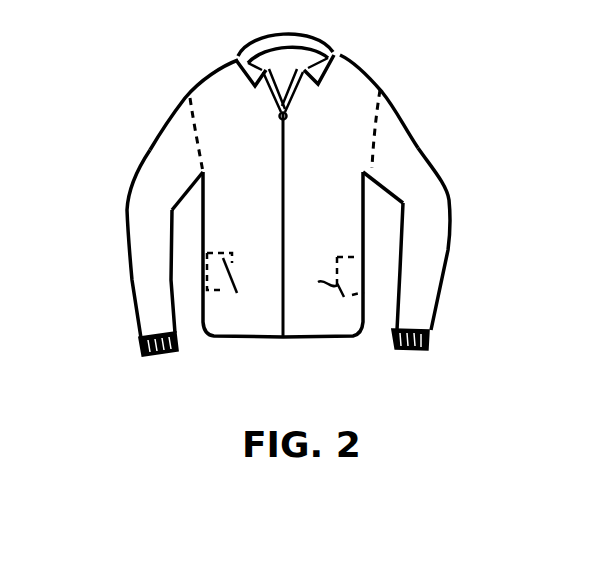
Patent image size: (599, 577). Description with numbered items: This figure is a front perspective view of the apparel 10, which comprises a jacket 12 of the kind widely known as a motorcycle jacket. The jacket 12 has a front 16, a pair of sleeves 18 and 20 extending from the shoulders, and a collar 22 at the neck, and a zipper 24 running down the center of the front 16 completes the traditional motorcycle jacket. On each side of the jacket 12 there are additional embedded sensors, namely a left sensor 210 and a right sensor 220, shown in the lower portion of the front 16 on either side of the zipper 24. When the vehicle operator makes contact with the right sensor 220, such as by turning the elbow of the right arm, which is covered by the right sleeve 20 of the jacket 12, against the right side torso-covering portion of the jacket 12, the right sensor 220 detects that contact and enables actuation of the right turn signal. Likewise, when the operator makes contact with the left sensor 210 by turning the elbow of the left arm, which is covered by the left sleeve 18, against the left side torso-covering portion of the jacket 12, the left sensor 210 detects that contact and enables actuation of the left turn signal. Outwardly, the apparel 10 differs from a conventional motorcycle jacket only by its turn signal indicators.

The apparel 10 is at (286, 177).
The jacket 12 is at (195, 68).
The front 16 is at (332, 244).
The sleeve 18 is at (422, 184).
The sleeve 20 is at (146, 235).
The collar 22 is at (342, 54).
The zipper 24 is at (287, 117).
The left sensor 210 is at (328, 286).
The right sensor 220 is at (245, 278).